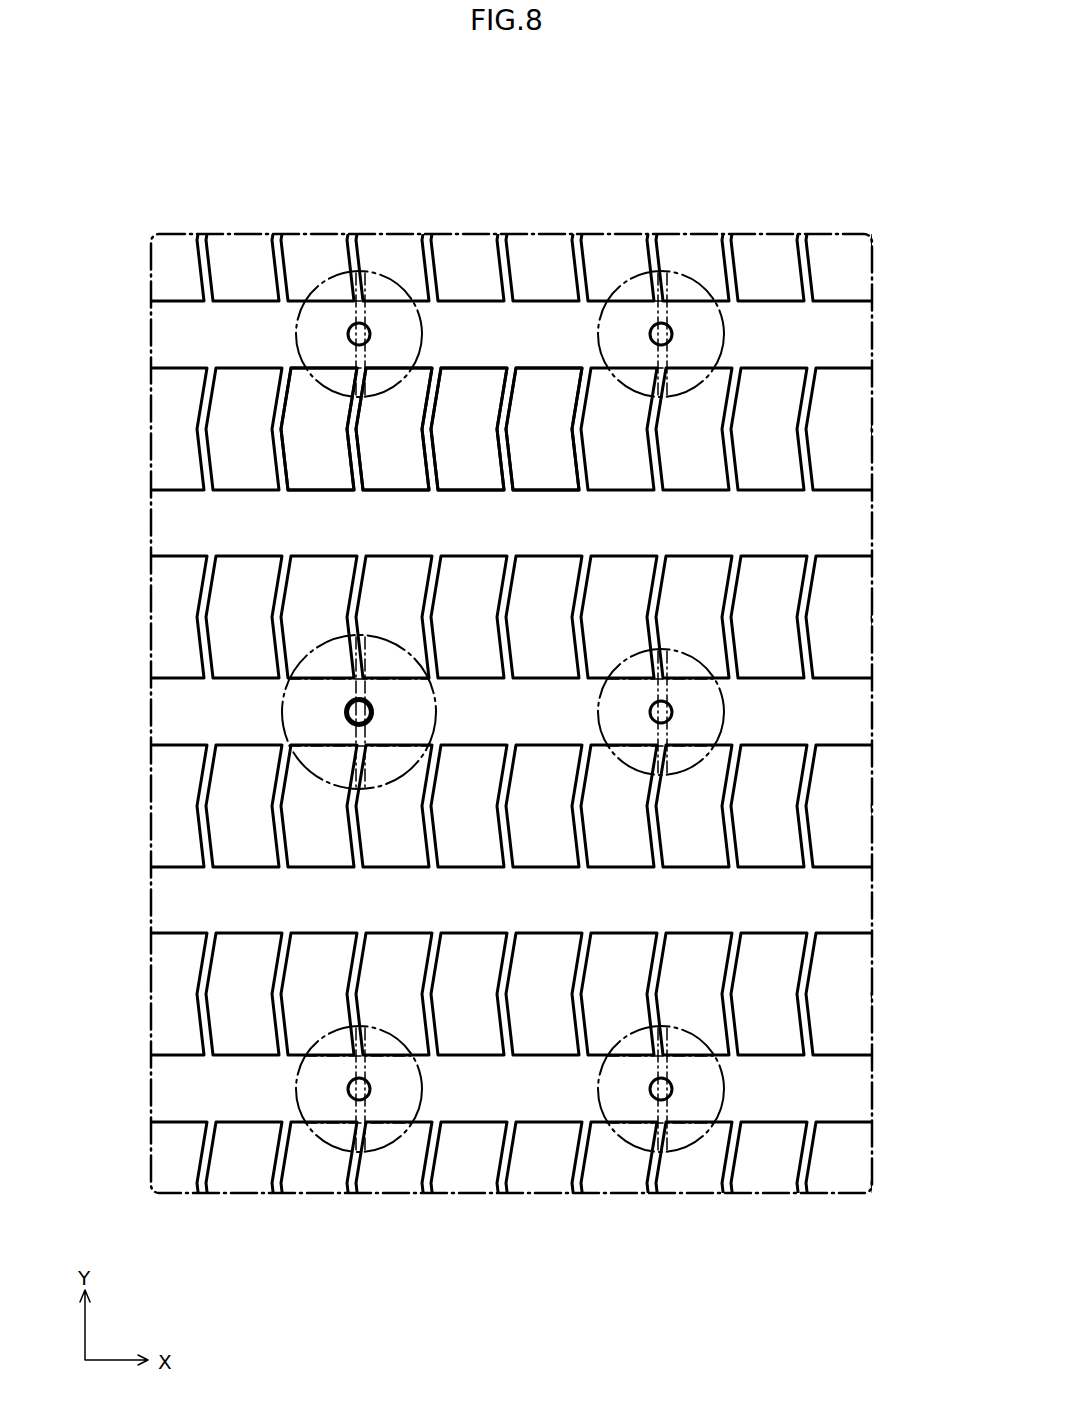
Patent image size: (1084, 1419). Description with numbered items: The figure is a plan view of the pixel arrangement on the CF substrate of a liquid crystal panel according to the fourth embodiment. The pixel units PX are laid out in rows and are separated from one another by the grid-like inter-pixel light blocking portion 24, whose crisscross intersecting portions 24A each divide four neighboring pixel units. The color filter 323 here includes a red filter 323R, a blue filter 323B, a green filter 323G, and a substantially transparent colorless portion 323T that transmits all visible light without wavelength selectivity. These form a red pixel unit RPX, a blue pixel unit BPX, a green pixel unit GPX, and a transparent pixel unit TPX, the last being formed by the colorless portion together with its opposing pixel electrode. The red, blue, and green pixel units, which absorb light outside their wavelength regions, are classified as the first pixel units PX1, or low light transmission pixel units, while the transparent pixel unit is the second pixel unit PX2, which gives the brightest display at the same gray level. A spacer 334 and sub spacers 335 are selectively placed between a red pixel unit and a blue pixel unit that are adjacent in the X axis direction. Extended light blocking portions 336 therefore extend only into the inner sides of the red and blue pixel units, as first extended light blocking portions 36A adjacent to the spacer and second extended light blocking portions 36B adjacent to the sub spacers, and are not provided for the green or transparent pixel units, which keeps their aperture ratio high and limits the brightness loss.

The inter-pixel light blocking portion 24 is at (817, 907).
The intersecting portion 24A is at (350, 318).
The color filter 323 is at (421, 373).
The red filter 323R is at (213, 433).
The green filter 323G is at (512, 327).
The blue filter 323B is at (252, 498).
The colorless portion 323T is at (639, 304).
The pixel unit PX is at (421, 373).
The first pixel unit PX1 is at (460, 398).
The second pixel unit PX2 is at (534, 392).
The red pixel unit RPX is at (303, 410).
The green pixel unit GPX is at (512, 327).
The blue pixel unit BPX is at (383, 458).
The transparent pixel unit TPX is at (639, 304).
The spacer 334 is at (344, 713).
The sub spacer 335 is at (347, 334).
The extended light blocking portion 336 is at (394, 628).
The first extended light blocking portion 36A is at (325, 665).
The second extended light blocking portion 36B is at (368, 290).